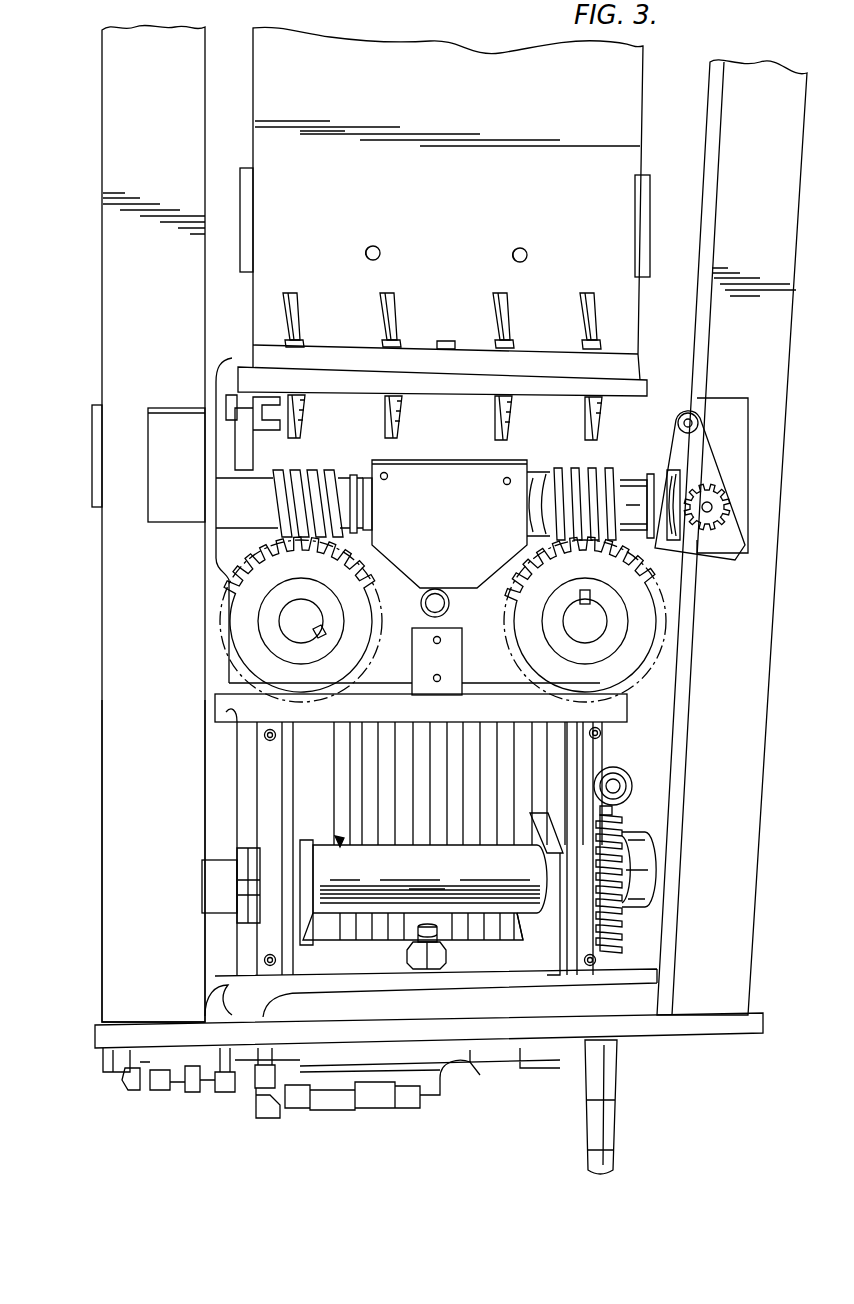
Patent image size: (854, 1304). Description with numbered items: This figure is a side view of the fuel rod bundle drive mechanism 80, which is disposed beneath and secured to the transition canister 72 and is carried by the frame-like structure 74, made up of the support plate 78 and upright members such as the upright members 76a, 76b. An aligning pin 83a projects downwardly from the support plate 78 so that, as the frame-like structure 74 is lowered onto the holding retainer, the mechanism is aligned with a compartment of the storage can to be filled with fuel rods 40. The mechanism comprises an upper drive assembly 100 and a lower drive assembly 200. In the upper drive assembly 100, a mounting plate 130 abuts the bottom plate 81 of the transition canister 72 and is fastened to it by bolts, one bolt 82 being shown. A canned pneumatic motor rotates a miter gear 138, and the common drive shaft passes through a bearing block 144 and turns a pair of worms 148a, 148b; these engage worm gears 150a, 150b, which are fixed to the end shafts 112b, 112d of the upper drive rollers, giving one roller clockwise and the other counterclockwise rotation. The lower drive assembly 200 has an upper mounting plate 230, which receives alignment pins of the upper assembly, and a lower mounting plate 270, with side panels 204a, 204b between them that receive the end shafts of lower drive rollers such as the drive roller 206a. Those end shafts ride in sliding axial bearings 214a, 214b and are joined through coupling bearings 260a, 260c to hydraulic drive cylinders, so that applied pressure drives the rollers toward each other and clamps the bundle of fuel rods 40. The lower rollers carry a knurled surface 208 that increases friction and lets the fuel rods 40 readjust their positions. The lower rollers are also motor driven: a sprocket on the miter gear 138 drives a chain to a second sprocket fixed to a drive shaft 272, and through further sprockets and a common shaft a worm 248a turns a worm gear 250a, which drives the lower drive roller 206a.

The frame-like structure 74 is at (102, 159).
The transition canister 72 is at (643, 138).
The upright member 76a is at (102, 812).
The upright member 76b is at (745, 812).
The support plate 78 is at (660, 1033).
The fuel rod bundle drive mechanism 80 is at (100, 588).
The bottom plate 81 is at (636, 357).
The bolt 82 is at (445, 341).
The aligning pin 83a is at (616, 1139).
The upper drive assembly 100 is at (212, 566).
The end shaft 112b is at (307, 614).
The end shaft 112d is at (590, 614).
The mounting plate 130 is at (650, 388).
The miter gear 138 is at (706, 530).
The bearing block 144 is at (453, 480).
The worm 148a is at (306, 470).
The worm 148b is at (563, 468).
The worm gear 150a is at (240, 637).
The worm gear 150b is at (640, 641).
The lower drive assembly 200 is at (228, 790).
The side panel 204a is at (263, 758).
The side panel 204b is at (596, 762).
The drive roller 206a is at (340, 842).
The knurled surface 208 is at (431, 894).
The sliding axial bearing 214a is at (302, 937).
The sliding axial bearing 214b is at (553, 950).
The mounting plate 230 is at (630, 711).
The worm 248a is at (628, 777).
The worm gear 250a is at (618, 832).
The coupling bearing 260a is at (652, 880).
The coupling bearing 260c is at (222, 858).
The lower mounting plate 270 is at (625, 975).
The drive shaft 272 is at (447, 958).
The fuel rods 40 is at (333, 770).